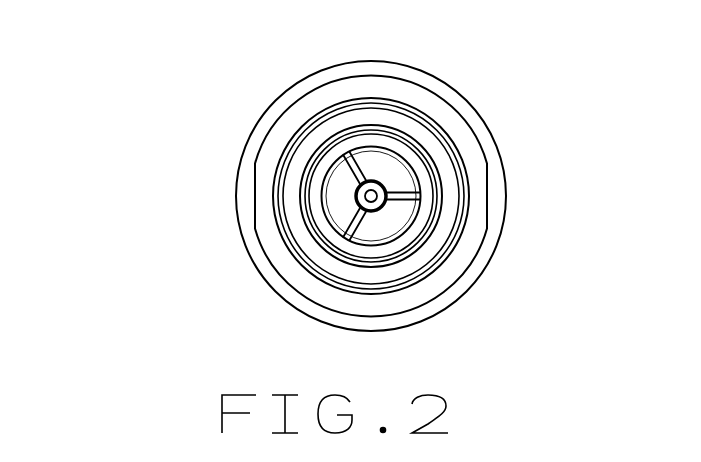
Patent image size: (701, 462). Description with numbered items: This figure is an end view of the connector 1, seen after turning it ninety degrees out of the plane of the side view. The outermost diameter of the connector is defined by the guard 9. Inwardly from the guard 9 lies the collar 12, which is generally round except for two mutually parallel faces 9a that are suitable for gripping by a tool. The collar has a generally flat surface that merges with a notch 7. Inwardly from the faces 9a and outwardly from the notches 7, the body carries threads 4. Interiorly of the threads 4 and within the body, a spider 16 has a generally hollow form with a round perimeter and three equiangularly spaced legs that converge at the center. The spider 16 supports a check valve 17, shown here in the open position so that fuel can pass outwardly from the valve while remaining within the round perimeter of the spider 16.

The closure cap assembly 1 is at (176, 113).
The threads 4 is at (298, 130).
The notch 7 is at (440, 270).
The guard 9 is at (483, 117).
The mutually parallel faces 9a is at (488, 193).
The collar 12 is at (361, 199).
The spider 16 is at (362, 178).
The check valve 17 is at (388, 172).